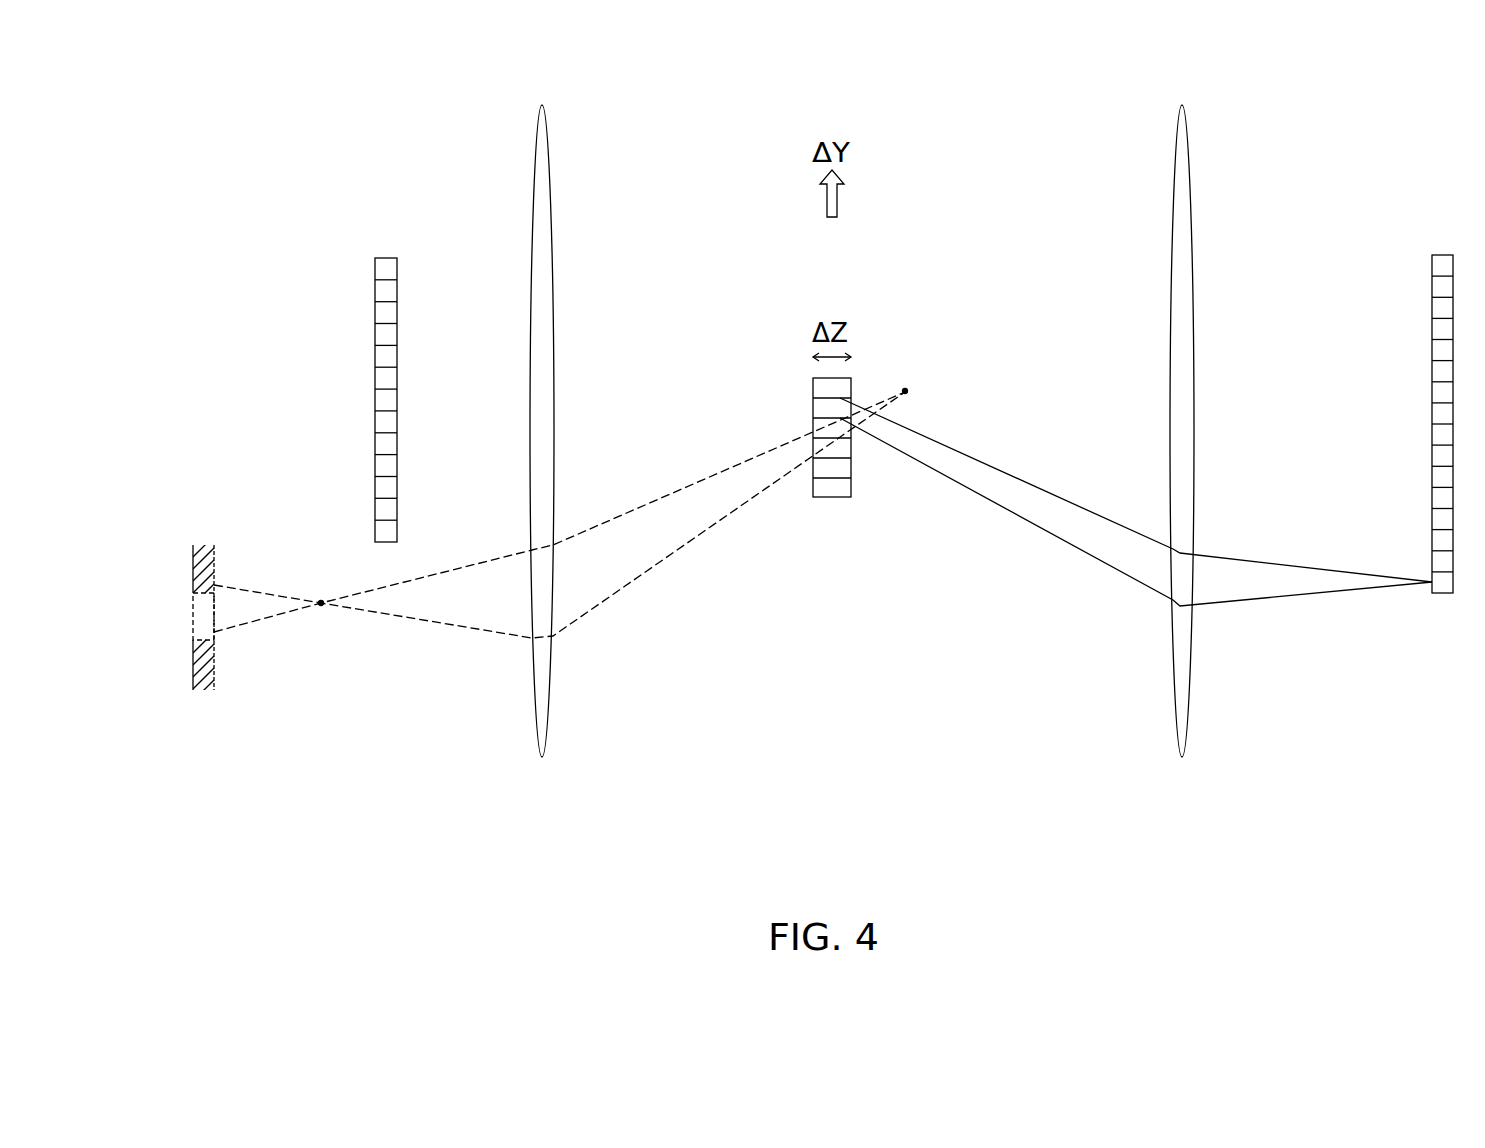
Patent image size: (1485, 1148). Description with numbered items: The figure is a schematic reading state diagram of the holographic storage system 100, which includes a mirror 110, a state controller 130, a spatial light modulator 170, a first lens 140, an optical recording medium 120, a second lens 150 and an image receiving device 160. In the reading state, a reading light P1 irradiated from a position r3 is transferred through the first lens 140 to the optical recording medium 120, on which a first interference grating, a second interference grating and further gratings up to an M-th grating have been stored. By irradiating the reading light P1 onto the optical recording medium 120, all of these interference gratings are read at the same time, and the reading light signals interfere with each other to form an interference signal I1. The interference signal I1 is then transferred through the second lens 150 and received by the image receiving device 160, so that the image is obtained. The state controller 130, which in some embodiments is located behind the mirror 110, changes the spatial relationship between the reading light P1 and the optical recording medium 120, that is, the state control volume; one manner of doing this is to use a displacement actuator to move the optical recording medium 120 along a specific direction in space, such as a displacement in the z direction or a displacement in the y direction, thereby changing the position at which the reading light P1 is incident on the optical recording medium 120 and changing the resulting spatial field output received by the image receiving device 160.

The holographic storage system 100 is at (290, 76).
The mirror 110 is at (214, 668).
The optical recording medium 120 is at (830, 497).
The state controller 130 is at (193, 617).
The first lens 140 is at (541, 757).
The second lens 150 is at (1181, 757).
The image receiving device 160 is at (1440, 593).
The spatial light modulator 170 is at (375, 420).
The reading light P1 is at (475, 565).
The position r3 is at (319, 587).
The interference signal I1 is at (1047, 491).